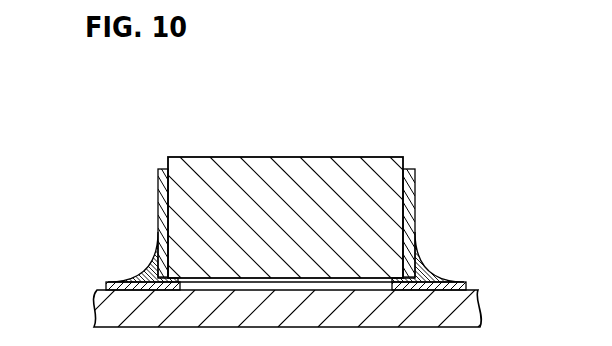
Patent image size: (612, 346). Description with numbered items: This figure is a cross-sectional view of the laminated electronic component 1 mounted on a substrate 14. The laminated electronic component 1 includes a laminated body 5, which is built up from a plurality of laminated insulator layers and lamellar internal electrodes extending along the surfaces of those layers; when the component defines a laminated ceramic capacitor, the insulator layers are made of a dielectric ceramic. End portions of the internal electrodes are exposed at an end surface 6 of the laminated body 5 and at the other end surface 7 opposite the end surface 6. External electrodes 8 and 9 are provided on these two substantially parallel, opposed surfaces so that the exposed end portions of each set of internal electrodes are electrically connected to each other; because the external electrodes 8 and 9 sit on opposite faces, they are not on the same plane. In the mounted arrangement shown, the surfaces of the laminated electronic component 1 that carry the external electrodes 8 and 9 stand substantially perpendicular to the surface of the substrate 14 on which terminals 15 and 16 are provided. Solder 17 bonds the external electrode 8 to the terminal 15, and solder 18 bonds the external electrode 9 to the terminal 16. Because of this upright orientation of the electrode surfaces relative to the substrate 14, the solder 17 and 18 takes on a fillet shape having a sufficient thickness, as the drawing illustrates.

The laminated electronic component 1 is at (285, 174).
The laminated body 5 is at (374, 157).
The end surface 6 is at (162, 198).
The other end surface 7 is at (415, 204).
The external electrode 8 is at (162, 180).
The external electrode 9 is at (415, 178).
The substrate 14 is at (475, 309).
The terminal 15 is at (106, 285).
The terminal 16 is at (465, 285).
The solder 17 is at (138, 262).
The solder 18 is at (433, 268).